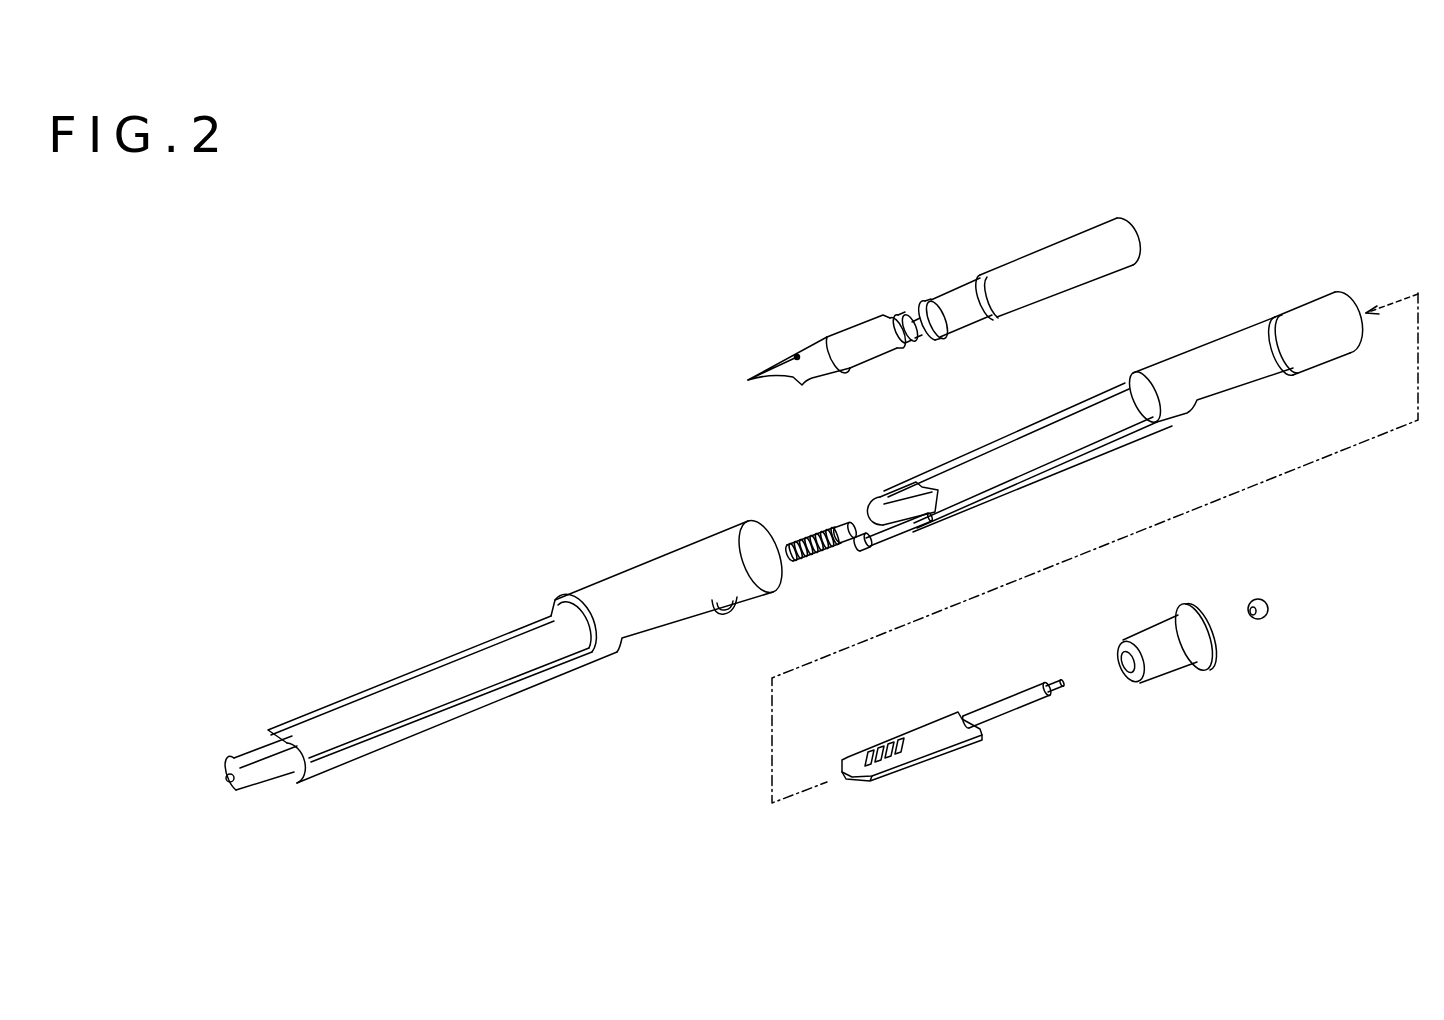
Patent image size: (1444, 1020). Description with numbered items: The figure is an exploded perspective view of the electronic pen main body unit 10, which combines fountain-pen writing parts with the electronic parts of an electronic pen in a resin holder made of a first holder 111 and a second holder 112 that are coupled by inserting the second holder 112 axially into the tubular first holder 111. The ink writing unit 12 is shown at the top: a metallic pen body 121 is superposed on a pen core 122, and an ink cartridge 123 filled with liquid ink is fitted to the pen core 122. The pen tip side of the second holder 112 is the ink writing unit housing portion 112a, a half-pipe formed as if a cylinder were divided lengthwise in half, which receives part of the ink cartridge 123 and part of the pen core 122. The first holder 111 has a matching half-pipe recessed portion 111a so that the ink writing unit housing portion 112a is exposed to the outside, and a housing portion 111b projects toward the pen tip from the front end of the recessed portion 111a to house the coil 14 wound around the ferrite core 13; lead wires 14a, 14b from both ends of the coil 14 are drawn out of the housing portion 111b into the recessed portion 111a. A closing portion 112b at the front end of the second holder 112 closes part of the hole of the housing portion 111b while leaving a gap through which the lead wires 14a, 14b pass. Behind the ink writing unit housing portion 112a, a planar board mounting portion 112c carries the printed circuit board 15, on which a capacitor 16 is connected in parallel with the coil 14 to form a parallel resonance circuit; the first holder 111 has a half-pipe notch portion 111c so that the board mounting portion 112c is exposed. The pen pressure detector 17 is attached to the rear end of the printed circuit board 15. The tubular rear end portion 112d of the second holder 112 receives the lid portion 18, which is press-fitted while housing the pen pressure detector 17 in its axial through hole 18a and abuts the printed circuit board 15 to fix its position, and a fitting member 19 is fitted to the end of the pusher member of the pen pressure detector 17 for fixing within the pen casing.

The electronic pen main body unit 10 is at (545, 411).
The ink writing unit 12 is at (978, 227).
The metallic pen body 121 is at (855, 333).
The pen core 122 is at (898, 318).
The ink cartridge 123 is at (955, 300).
The second holder 112 is at (1174, 413).
The ink writing unit housing portion 112a is at (1020, 450).
The closing portion 112b is at (880, 500).
The board mounting portion 112c is at (1243, 385).
The rear end portion 112d is at (1305, 315).
The ferrite core 13 is at (841, 522).
The coil 14 is at (812, 556).
The lead wire 14a is at (865, 548).
The lead wire 14b is at (887, 540).
The first holder 111 is at (520, 686).
The recessed portion 111a is at (447, 680).
The housing portion 111b is at (265, 781).
The notch portion 111c is at (666, 626).
The printed circuit board 15 is at (946, 742).
The capacitor 16 is at (865, 752).
The pen pressure detector 17 is at (1005, 700).
The lid portion 18 is at (1163, 667).
The through hole 18a is at (1125, 684).
The fitting member 19 is at (1261, 621).